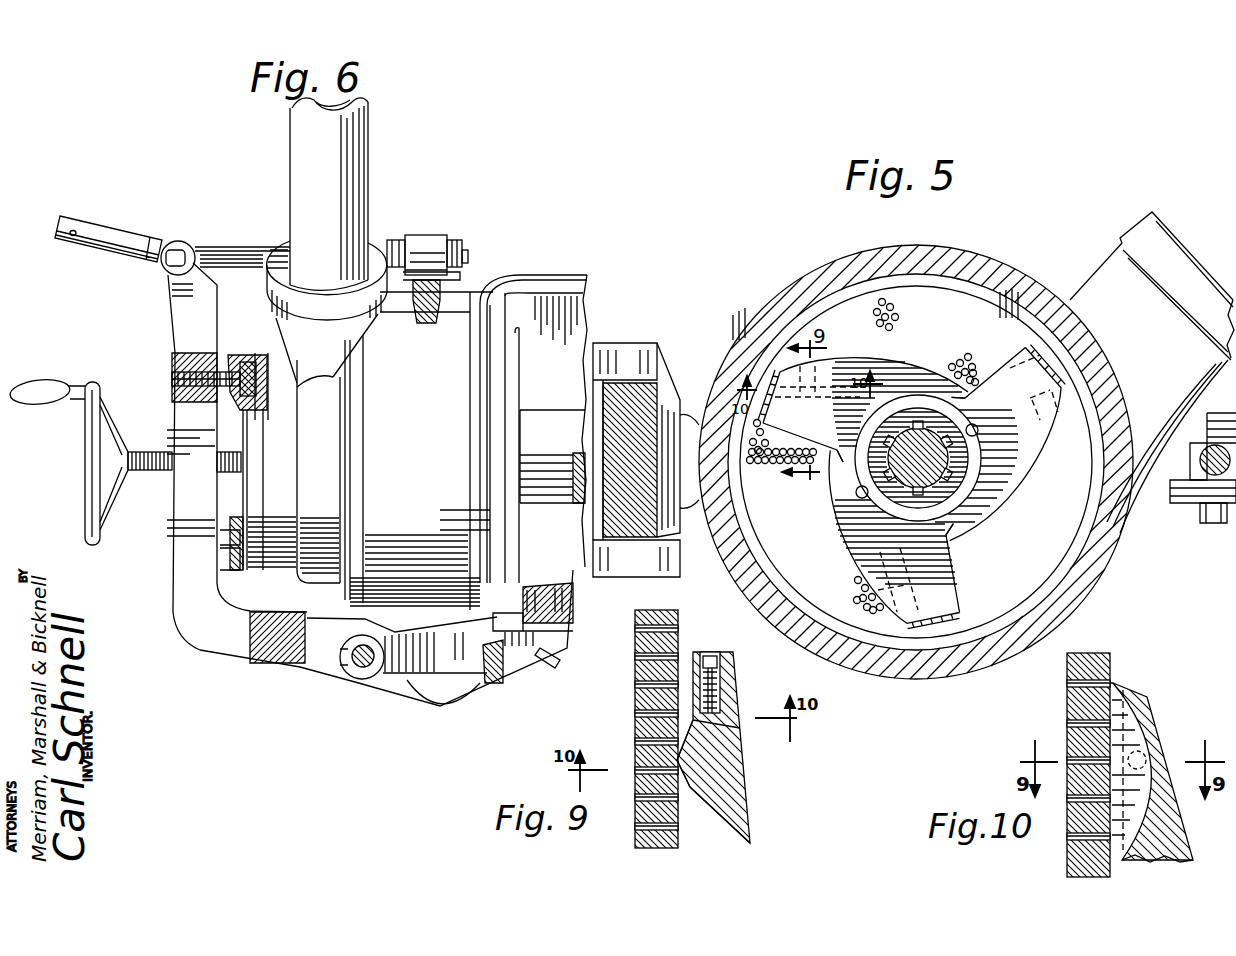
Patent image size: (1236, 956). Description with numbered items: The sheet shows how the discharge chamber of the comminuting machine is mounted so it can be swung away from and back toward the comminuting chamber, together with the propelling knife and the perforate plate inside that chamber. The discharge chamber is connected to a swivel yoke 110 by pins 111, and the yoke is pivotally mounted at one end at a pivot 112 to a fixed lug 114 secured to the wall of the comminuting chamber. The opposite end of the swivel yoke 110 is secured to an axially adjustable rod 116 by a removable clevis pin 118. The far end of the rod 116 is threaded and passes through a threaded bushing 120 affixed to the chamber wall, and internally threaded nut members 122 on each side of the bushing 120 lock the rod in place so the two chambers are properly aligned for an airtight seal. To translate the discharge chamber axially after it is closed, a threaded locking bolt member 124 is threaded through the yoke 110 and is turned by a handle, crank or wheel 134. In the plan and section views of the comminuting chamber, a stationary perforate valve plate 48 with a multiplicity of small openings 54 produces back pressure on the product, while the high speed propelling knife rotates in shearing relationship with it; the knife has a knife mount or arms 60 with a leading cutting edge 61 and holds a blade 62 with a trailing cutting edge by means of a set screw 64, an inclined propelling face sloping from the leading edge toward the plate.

In FIG. 9, the perforate valve plate 48 is at (637, 670).
In FIG. 10, the perforate valve plate 48 is at (1110, 656).
In FIG. 9, the small openings 54 is at (635, 744).
In FIG. 10, the small openings 54 is at (1067, 722).
In FIG. 5, the knife mount or arms 60 is at (873, 370).
In FIG. 9, the knife mount or arms 60 is at (748, 802).
In FIG. 10, the knife mount or arms 60 is at (1187, 820).
In FIG. 5, the leading cutting edge 61 is at (1027, 347).
In FIG. 9, the leading cutting edge 61 is at (750, 843).
In FIG. 5, the blade 62 is at (916, 483).
In FIG. 9, the blade 62 is at (738, 728).
In FIG. 10, the blade 62 is at (1113, 683).
In FIG. 9, the set screw 64 is at (711, 660).
In FIG. 10, the set screw 64 is at (1150, 752).
In FIG. 6, the swivel yoke 110 is at (173, 632).
In FIG. 6, the pins 111 is at (225, 357).
In FIG. 6, the pivot 112 is at (363, 676).
In FIG. 6, the fixed lug 114 is at (516, 654).
In FIG. 6, the axially adjustable rod 116 is at (233, 249).
In FIG. 6, the removable clevis pin 118 is at (115, 234).
In FIG. 6, the threaded bushing 120 is at (435, 235).
In FIG. 6, the nut members 122 is at (396, 244).
In FIG. 6, the threaded locking bolt member 124 is at (143, 450).
In FIG. 6, the handle, crank or wheel 134 is at (92, 475).